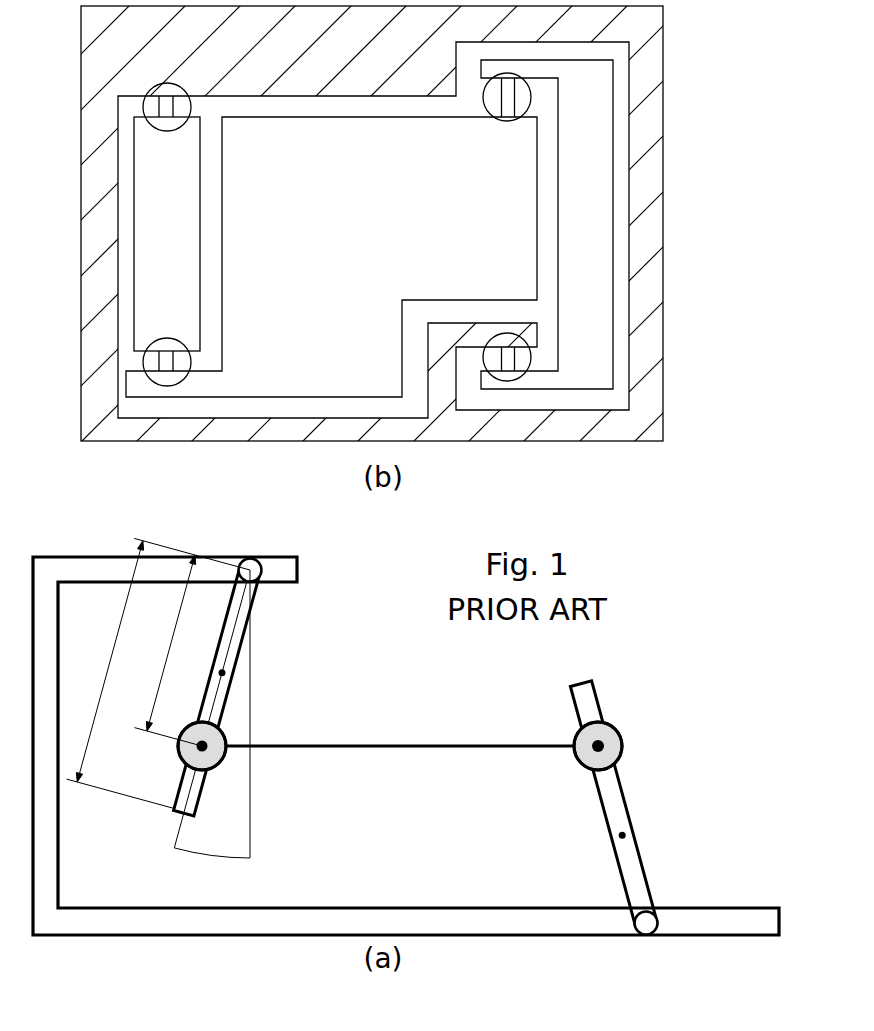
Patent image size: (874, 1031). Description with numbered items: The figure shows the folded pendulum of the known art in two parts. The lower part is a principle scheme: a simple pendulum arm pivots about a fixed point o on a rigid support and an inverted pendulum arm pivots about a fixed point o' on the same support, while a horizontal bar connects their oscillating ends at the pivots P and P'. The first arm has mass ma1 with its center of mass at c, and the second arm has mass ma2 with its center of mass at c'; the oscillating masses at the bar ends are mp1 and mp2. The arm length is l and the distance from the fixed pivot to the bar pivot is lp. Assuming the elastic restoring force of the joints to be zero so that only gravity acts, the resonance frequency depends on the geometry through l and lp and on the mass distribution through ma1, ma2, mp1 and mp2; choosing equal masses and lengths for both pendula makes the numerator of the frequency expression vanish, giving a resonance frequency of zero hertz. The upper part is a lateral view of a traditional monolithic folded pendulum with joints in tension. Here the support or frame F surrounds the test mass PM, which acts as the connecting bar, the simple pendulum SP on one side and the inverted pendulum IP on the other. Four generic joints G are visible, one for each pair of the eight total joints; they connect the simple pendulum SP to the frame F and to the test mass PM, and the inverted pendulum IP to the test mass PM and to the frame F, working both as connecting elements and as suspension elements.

The frame F is at (437, 225).
The simple pendulum SP is at (167, 234).
The test mass PM is at (331, 257).
The inverted pendulum IP is at (547, 224).
The generic joint G is at (508, 380).
The pivot point of first arm o is at (251, 554).
The pivot point of second arm o' is at (657, 908).
The center of mass of first arm c is at (207, 661).
The center of mass of second arm c' is at (638, 825).
The first pendulum pivot P is at (202, 746).
The second pendulum pivot P' is at (607, 742).
The mass of the first pendulum arm ma1 is at (243, 704).
The mass of the second pendulum arm ma2 is at (606, 807).
The first oscillating mass mp1 is at (178, 750).
The second oscillating mass mp2 is at (576, 753).
The pendulum arm length l is at (158, 673).
The pivot distance lp is at (169, 650).